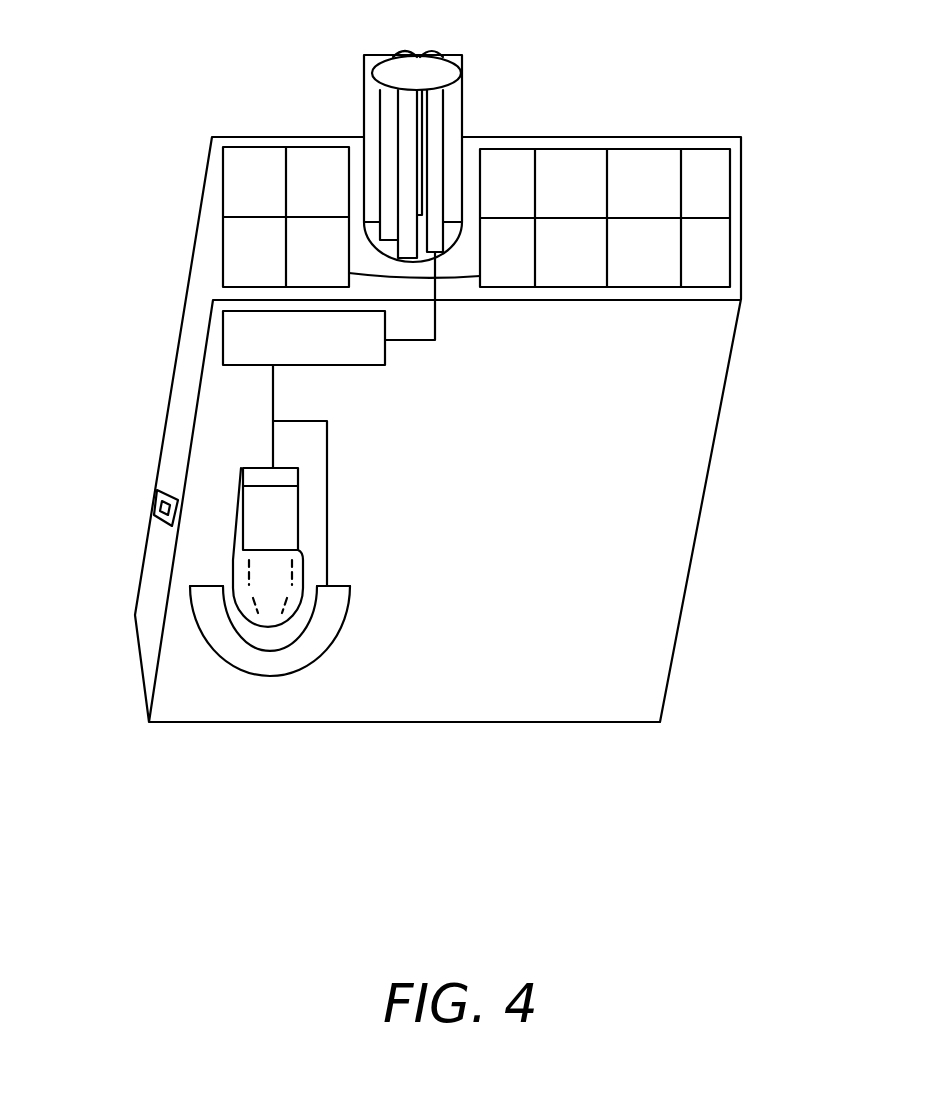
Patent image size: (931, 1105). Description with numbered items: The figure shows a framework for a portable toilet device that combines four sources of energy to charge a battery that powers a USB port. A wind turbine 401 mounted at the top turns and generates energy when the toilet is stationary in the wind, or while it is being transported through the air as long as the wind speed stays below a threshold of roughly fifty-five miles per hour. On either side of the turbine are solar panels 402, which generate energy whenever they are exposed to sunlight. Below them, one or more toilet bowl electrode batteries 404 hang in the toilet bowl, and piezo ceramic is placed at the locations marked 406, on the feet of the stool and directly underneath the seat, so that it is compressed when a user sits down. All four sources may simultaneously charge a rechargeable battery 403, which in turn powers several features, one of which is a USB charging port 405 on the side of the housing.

The wind turbine 401 is at (463, 112).
The solar panels 402 is at (232, 183).
The rechargeable battery 403 is at (222, 338).
The toilet bowl electrode batteries 404 is at (300, 563).
The USB charging port 405 is at (157, 503).
The piezo ceramic locations 406 is at (237, 582).